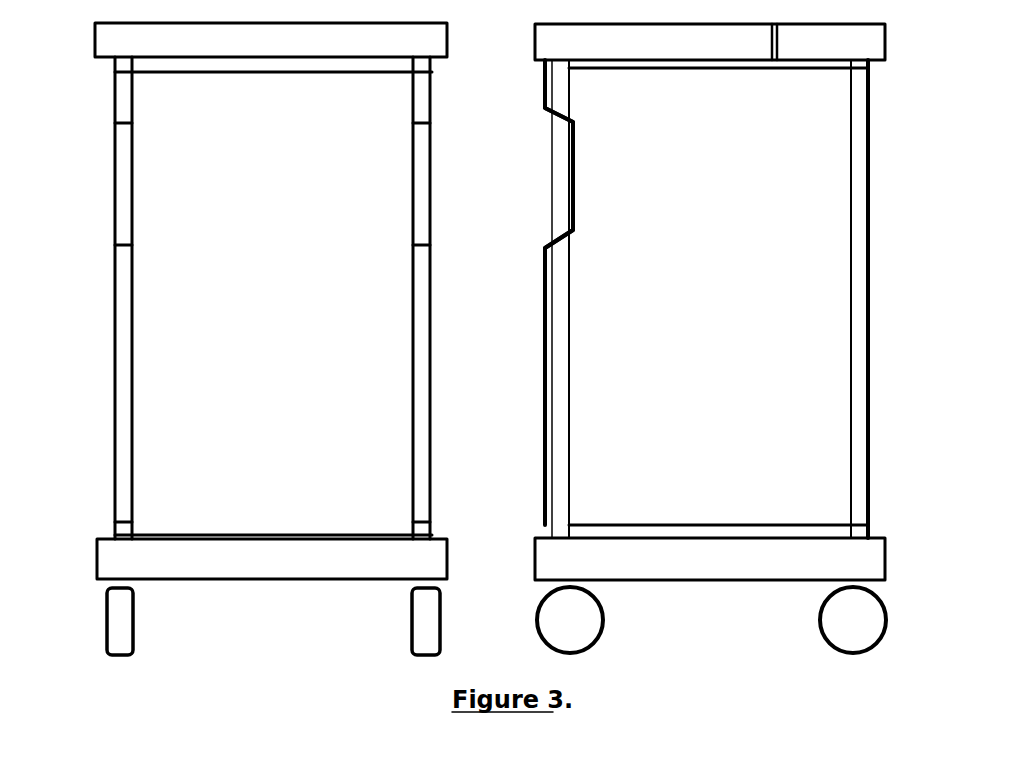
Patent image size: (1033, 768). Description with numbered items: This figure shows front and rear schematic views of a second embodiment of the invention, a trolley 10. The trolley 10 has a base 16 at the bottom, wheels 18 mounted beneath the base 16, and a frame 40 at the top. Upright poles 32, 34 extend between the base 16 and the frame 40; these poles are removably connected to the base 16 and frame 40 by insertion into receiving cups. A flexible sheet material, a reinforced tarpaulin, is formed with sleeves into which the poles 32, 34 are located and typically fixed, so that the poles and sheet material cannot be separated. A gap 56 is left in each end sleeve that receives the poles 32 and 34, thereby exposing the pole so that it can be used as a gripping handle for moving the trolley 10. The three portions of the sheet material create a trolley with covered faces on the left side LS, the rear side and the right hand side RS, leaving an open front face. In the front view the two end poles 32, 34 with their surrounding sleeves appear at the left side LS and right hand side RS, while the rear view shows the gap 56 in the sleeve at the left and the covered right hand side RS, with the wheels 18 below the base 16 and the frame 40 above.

The trolley 10 is at (484, 392).
The base 16 is at (108, 556).
The wheels 18 is at (133, 638).
The pole 32 is at (122, 176).
The pole 34 is at (420, 177).
The frame 40 is at (118, 37).
The gap 56 is at (573, 153).
The left side LS is at (113, 368).
The right hand side RS is at (431, 363).